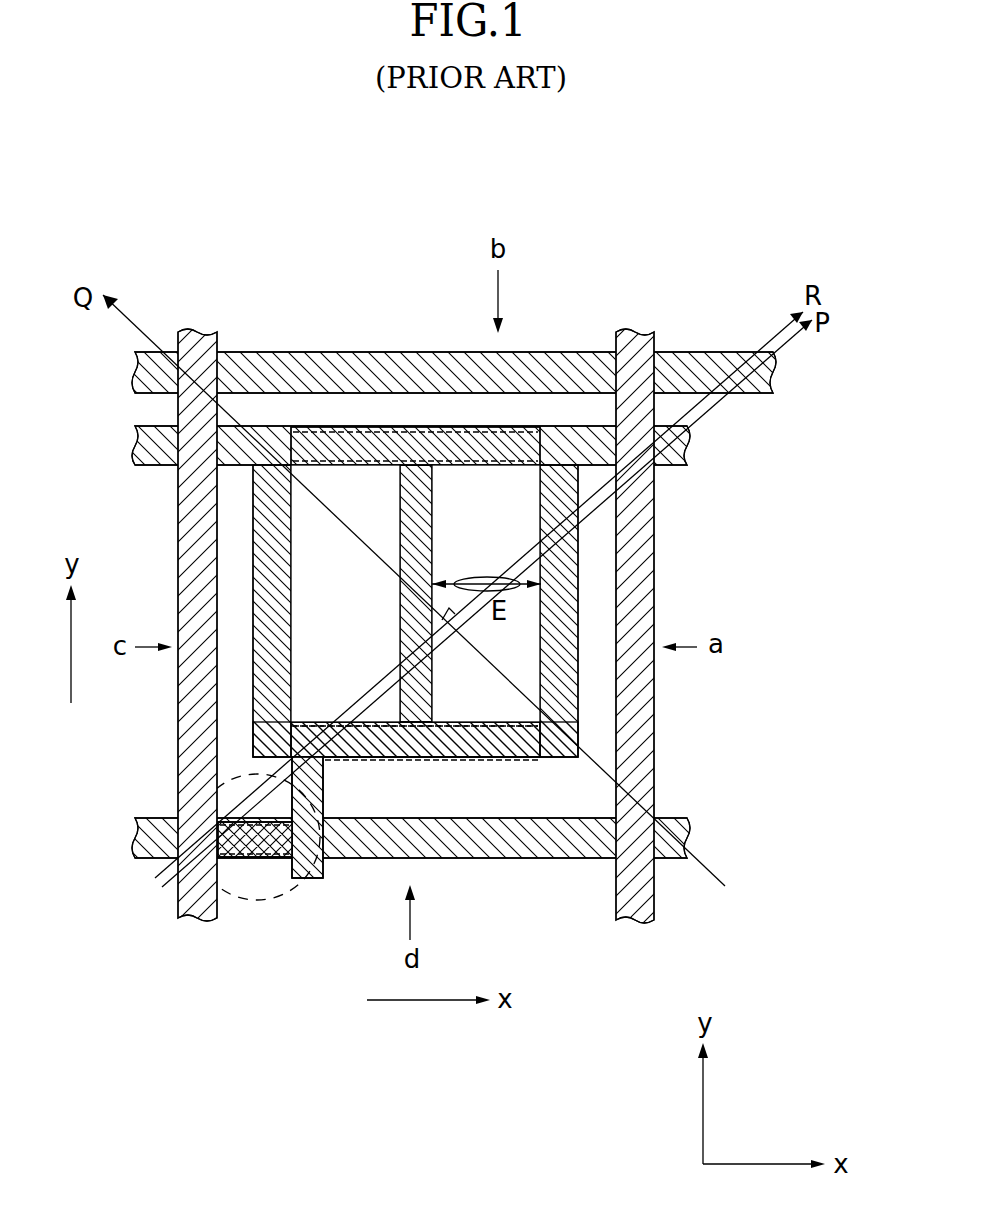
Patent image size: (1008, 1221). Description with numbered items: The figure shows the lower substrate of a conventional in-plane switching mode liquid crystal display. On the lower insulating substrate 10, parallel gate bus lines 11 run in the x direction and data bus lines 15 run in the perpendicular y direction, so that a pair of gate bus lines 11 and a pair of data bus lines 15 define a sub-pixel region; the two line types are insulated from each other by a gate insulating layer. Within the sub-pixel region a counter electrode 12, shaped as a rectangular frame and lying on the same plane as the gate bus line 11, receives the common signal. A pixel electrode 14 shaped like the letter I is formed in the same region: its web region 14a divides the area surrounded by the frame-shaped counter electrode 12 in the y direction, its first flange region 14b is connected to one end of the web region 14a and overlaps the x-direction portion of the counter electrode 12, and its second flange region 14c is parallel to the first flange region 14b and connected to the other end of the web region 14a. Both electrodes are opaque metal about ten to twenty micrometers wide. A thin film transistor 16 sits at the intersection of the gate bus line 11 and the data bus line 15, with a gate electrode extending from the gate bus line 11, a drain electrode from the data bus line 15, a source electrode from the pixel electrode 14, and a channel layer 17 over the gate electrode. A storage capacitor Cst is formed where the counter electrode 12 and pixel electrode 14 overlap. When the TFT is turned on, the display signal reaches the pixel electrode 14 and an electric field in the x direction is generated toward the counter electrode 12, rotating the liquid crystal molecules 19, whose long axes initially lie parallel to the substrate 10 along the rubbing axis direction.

The lower insulating substrate 10 is at (443, 910).
The gate bus line 11 is at (773, 373).
The counter electrode 12 is at (570, 437).
The pixel electrode 14 is at (567, 605).
The web region 14a is at (420, 673).
The first flange region 14b is at (527, 453).
The second flange region 14c is at (525, 747).
The data bus line 15 is at (193, 900).
The thin film transistor 16 is at (288, 893).
The channel layer 17 is at (263, 843).
The liquid crystal molecules 19 is at (486, 577).
The storage capacitor Cst is at (410, 452).